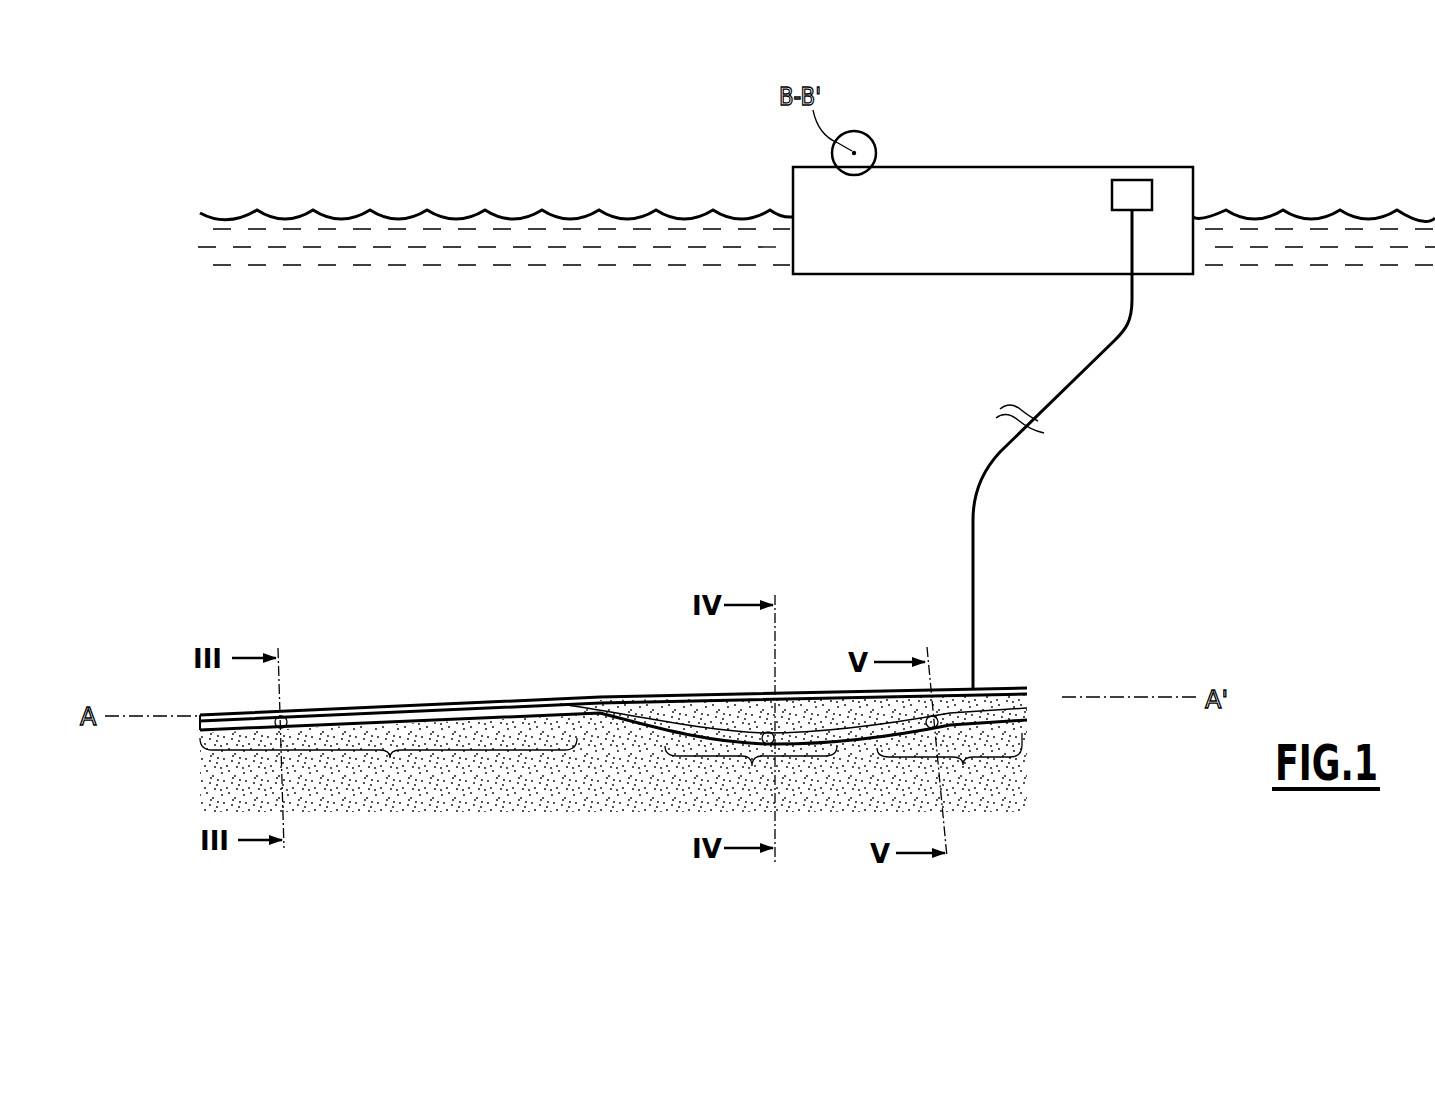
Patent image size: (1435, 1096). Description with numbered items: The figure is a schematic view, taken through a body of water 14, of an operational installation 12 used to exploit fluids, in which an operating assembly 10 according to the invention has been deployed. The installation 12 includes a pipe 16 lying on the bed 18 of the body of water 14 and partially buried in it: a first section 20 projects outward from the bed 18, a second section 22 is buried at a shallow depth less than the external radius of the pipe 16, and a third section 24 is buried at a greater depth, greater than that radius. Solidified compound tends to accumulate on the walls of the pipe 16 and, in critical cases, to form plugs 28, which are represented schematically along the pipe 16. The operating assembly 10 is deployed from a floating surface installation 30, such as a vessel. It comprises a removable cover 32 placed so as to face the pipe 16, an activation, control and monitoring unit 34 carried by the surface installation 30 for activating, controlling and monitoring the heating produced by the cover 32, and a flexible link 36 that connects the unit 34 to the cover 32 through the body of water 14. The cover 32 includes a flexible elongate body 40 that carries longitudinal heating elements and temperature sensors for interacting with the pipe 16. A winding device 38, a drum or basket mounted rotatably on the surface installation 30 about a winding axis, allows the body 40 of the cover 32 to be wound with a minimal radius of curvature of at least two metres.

The operating assembly 10 is at (683, 500).
The operational installation 12 is at (566, 590).
The body of water 14 is at (613, 636).
The pipe 16 is at (190, 727).
The bed of the body of water 18 is at (490, 711).
The first section 20 is at (388, 764).
The second section 22 is at (949, 765).
The third section 24 is at (751, 776).
The plugs 28 is at (289, 716).
The floating surface installation 30 is at (1186, 181).
The removable cover 32 is at (404, 690).
The activation, control and monitoring unit 34 is at (1135, 180).
The flexible link 36 is at (1090, 363).
The winding device 38 is at (866, 142).
The flexible elongate body 40 is at (570, 698).